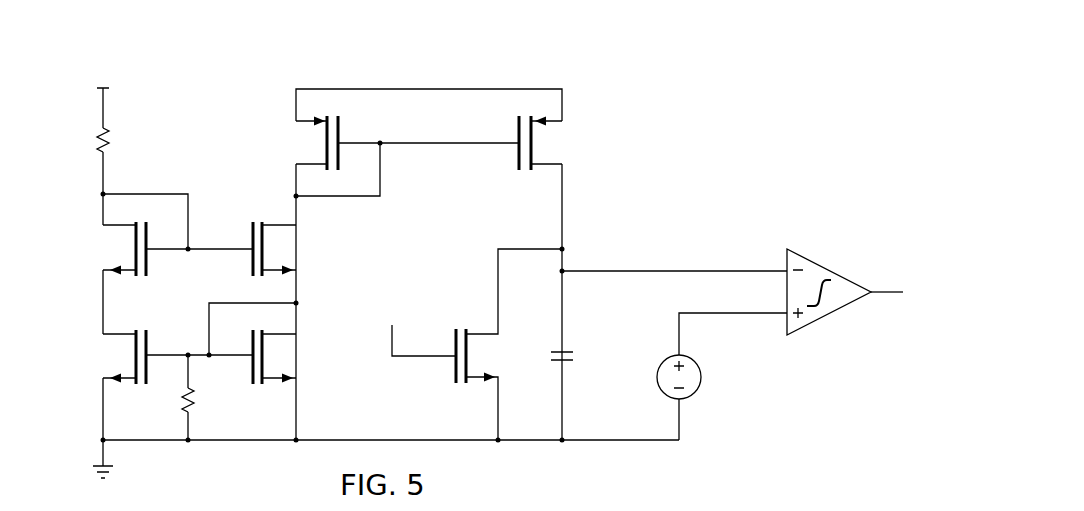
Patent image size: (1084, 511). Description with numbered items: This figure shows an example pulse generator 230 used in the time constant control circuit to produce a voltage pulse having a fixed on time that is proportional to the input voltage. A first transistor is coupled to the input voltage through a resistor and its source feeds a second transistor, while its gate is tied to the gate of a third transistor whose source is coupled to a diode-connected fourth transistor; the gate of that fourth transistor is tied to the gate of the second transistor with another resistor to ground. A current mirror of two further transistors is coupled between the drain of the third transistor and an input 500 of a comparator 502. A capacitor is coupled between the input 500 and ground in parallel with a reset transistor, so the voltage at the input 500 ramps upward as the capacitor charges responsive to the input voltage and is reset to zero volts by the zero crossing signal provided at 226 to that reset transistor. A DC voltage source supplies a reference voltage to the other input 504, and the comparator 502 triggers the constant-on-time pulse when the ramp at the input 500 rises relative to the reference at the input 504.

The pulse generator 230 is at (770, 86).
The input of the comparator 500 is at (673, 269).
The comparator 502 is at (830, 313).
The other input of the comparator 504 is at (731, 314).
The zero crossing signal 226 is at (415, 357).